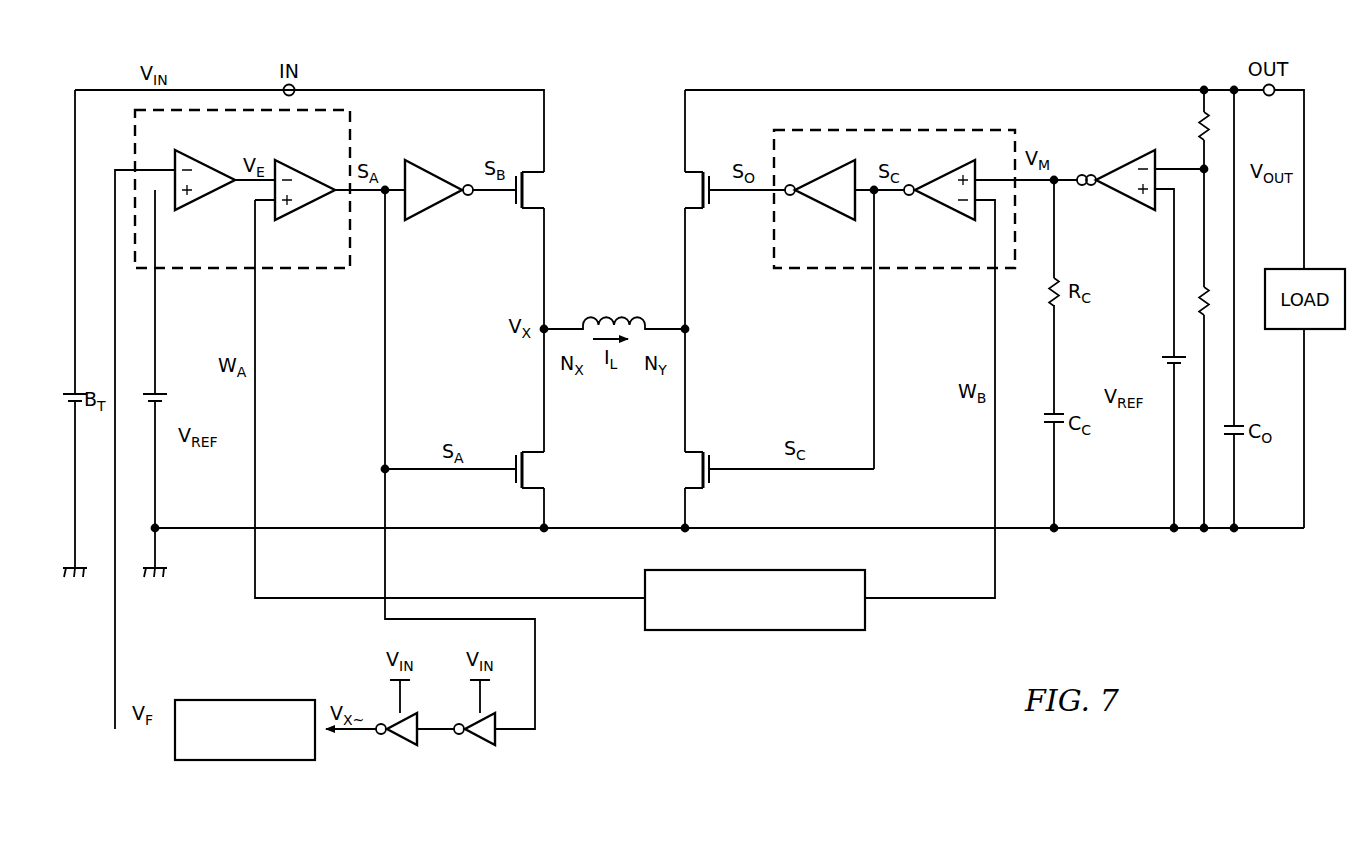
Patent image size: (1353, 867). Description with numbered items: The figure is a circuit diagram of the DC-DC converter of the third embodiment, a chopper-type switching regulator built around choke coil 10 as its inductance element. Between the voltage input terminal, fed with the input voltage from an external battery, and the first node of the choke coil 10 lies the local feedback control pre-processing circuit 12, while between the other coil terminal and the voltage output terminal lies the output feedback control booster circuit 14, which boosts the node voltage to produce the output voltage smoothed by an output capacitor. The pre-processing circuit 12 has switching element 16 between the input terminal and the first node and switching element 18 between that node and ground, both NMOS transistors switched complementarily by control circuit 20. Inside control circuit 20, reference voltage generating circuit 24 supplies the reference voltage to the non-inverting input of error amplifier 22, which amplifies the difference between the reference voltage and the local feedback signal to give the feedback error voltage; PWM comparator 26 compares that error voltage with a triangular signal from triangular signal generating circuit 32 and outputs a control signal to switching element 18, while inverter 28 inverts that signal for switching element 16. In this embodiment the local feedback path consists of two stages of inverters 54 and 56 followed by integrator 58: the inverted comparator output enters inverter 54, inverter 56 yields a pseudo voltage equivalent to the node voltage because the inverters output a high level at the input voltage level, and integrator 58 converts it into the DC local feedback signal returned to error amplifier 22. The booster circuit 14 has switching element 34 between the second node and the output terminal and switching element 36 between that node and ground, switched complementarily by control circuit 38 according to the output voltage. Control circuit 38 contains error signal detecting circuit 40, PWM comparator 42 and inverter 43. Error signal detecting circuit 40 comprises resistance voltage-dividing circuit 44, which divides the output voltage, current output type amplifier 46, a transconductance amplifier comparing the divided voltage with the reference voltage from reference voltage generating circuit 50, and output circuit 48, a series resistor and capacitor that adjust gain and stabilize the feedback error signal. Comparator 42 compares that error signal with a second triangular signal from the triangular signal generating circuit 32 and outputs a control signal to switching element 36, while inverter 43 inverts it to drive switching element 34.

The choke coil 10 is at (548, 333).
The pre-processing circuit 12 is at (380, 72).
The booster circuit 14 is at (852, 72).
The switching element 16 is at (514, 204).
The switching element 18 is at (514, 483).
The control circuit 20 is at (242, 189).
The error amplifier 22 is at (208, 163).
The reference voltage generating circuit 24 is at (160, 396).
The PWM comparator 26 is at (300, 218).
The inverter 28 is at (430, 170).
The triangular signal generating circuit 32 is at (756, 632).
The switching element 34 is at (713, 204).
The switching element 36 is at (713, 483).
The control circuit 38 is at (924, 106).
The error signal detecting circuit 40 is at (836, 274).
The PWM comparator 42 is at (942, 215).
The inverter 43 is at (822, 215).
The resistance voltage-dividing circuit 44 is at (1200, 126).
The current output type amplifier 46 is at (1124, 204).
The output circuit 48 is at (1056, 356).
The reference voltage generating circuit 50 is at (1168, 360).
The inverter 54 is at (476, 748).
The inverter 56 is at (396, 748).
The integrator 58 is at (244, 762).